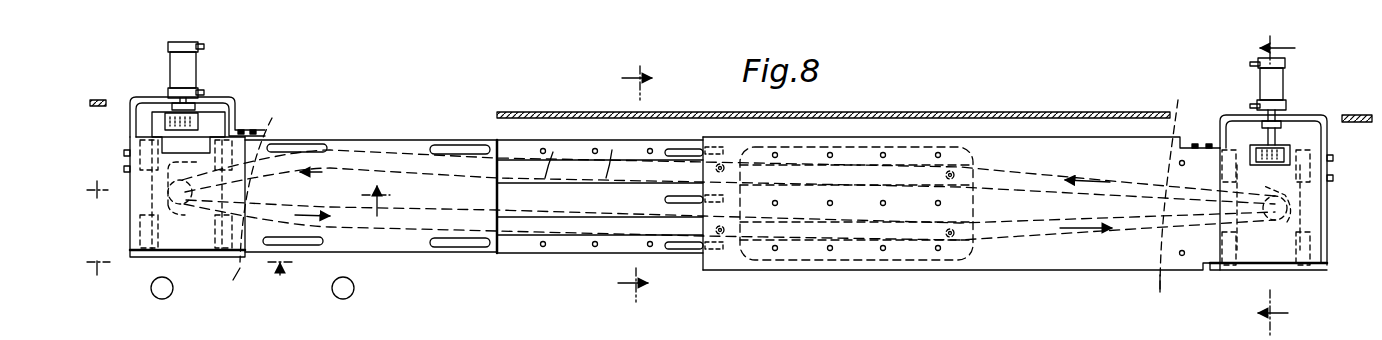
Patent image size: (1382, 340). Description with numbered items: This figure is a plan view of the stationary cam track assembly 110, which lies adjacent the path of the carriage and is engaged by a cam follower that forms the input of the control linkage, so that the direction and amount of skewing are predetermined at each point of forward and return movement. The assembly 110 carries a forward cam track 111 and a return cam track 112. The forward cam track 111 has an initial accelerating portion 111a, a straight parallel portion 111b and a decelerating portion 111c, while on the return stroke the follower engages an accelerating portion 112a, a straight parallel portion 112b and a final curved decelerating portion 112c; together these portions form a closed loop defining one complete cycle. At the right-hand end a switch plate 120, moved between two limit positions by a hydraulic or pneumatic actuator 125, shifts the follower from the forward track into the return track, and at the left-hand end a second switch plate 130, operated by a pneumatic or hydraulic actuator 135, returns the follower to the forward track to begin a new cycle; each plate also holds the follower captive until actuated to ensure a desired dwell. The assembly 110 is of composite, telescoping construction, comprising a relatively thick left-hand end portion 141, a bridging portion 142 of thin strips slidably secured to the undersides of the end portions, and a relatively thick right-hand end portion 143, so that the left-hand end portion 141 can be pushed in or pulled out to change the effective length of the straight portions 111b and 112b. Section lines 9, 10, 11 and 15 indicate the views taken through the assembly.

The cam track assembly 110 is at (592, 298).
The forward cam track 111 is at (552, 255).
The accelerating portion 111a is at (215, 285).
The straight parallel portion 111b is at (620, 258).
The decelerating portion 111c is at (1142, 295).
The return cam track 112 is at (612, 150).
The accelerating portion 112a is at (1175, 184).
The straight parallel portion 112b is at (568, 126).
The curved decelerating portion 112c is at (281, 179).
The switch plate 120 is at (1300, 214).
The hydraulic or pneumatic actuator 125 is at (1276, 88).
The second switch plate 130 is at (150, 190).
The pneumatic or hydraulic actuator 135 is at (170, 67).
The left-hand end portion 141 is at (400, 253).
The bridging portion 142 is at (515, 253).
The right-hand end portion 143 is at (810, 270).
The section line 9- 9 is at (189, 283).
The section line 10- 10 is at (1291, 186).
The section line 11- 11 is at (655, 184).
The section line 15- 15 is at (236, 206).